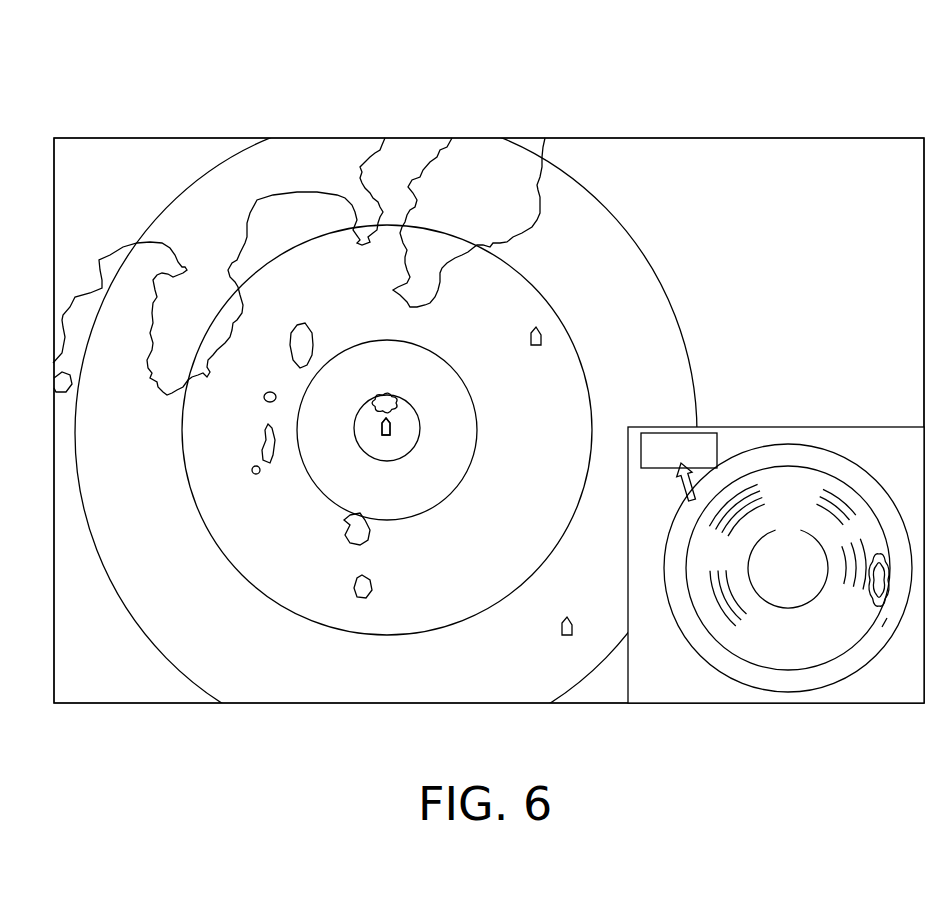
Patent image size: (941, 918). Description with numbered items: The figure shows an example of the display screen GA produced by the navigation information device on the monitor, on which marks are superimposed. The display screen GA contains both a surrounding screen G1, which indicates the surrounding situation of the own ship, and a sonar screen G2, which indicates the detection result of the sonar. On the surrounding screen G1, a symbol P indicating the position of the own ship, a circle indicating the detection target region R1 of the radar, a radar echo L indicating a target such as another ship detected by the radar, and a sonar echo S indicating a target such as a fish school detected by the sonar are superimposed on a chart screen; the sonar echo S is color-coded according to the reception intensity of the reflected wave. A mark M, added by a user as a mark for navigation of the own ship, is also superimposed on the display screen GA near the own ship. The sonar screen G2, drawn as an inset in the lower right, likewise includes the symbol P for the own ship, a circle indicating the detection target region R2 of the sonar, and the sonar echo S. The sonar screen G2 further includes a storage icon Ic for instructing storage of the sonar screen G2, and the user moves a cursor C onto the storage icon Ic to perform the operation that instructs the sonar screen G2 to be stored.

The display screen GA is at (545, 88).
The surrounding screen G1 is at (810, 138).
The sonar screen G2 is at (830, 427).
The detection target region of the radar R1 is at (637, 247).
The detection target region of the sonar R2 is at (418, 438).
The sonar echo S is at (377, 397).
The mark M is at (378, 417).
The symbol indicating the position of the own ship P is at (392, 426).
The radar echo L is at (545, 338).
The storage icon Ic is at (708, 427).
The cursor C is at (679, 493).